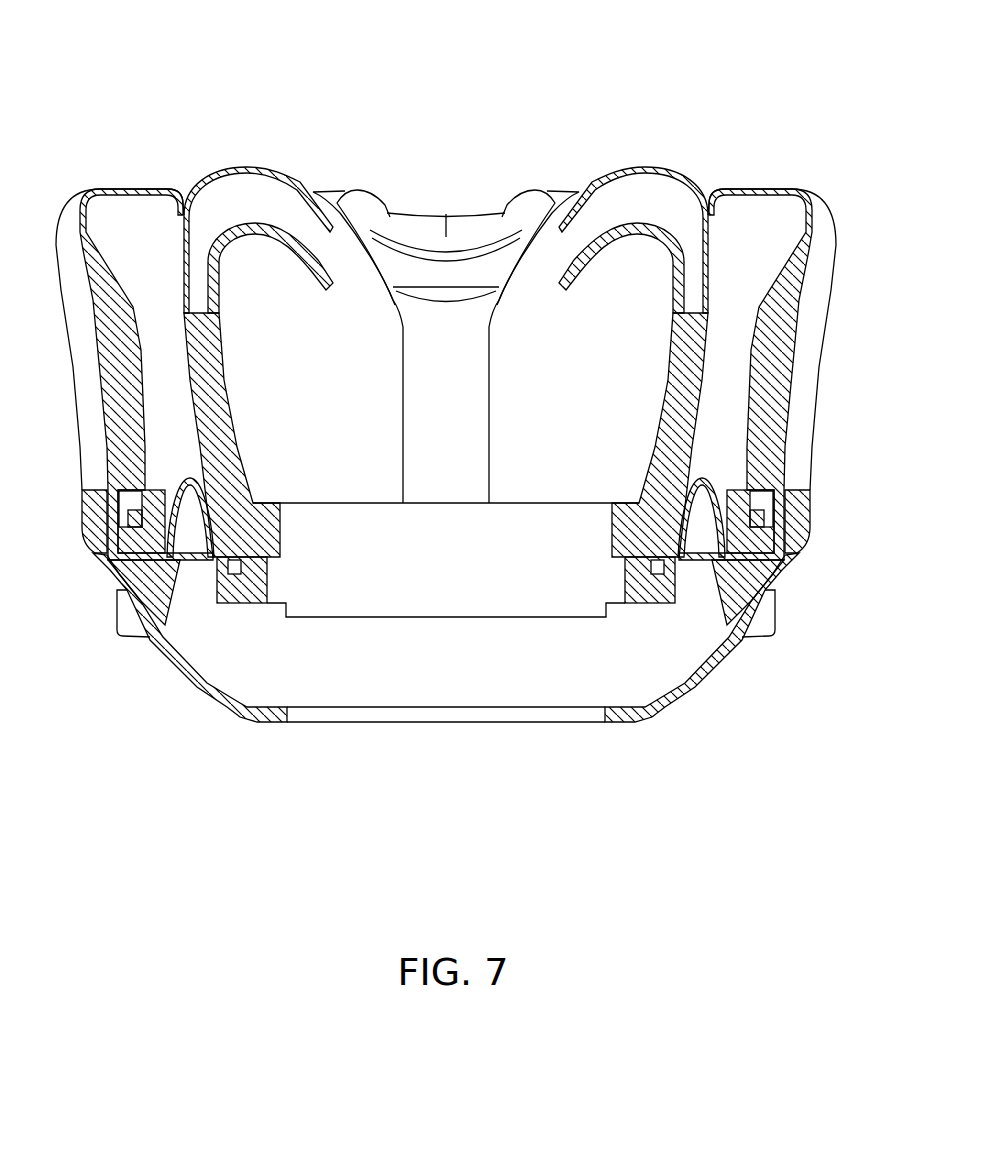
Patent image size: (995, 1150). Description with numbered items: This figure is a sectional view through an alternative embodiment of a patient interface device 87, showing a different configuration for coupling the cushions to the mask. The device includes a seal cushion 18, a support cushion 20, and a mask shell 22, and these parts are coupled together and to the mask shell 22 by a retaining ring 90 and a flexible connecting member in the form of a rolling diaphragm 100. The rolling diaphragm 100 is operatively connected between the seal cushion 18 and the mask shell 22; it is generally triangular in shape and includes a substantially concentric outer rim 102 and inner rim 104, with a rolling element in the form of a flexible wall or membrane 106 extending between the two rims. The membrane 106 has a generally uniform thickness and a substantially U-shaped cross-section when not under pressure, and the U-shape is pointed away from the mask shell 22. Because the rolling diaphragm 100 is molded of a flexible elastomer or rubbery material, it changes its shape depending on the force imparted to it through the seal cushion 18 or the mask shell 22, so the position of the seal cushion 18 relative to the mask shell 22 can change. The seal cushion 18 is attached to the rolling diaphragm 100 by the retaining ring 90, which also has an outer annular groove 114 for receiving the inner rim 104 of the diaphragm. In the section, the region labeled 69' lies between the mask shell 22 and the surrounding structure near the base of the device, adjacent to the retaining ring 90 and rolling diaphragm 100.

The patient interface device 87 is at (190, 90).
The seal cushion 18 is at (672, 168).
The support cushion 20 is at (808, 342).
The mask shell 22 is at (680, 697).
The tab 69' is at (732, 652).
The retaining ring 90 is at (600, 603).
The rolling diaphragm 100 is at (150, 643).
The outer rim 102 is at (107, 563).
The inner rim 104 is at (235, 550).
The flexible wall or membrane 106 is at (122, 487).
The outer annular groove 114 is at (628, 603).